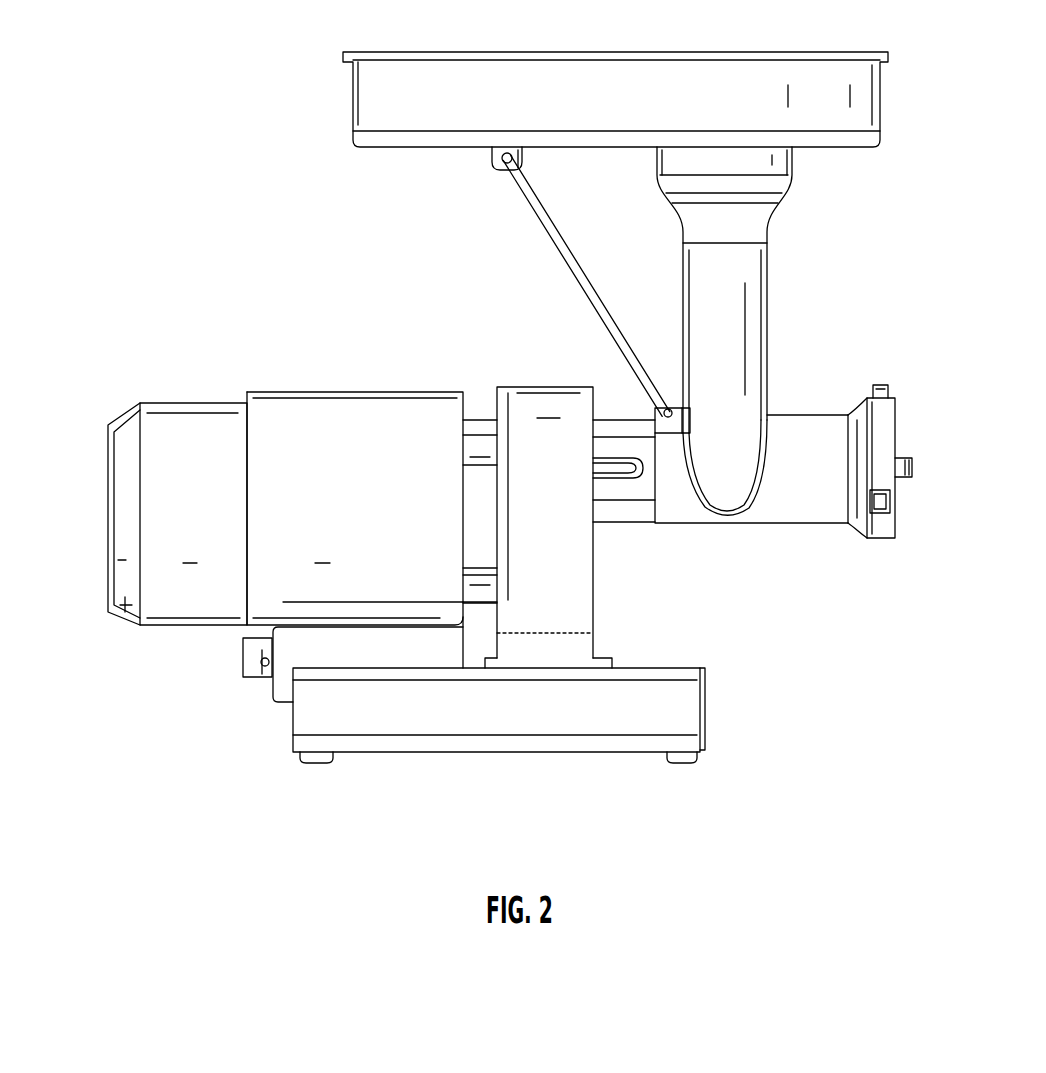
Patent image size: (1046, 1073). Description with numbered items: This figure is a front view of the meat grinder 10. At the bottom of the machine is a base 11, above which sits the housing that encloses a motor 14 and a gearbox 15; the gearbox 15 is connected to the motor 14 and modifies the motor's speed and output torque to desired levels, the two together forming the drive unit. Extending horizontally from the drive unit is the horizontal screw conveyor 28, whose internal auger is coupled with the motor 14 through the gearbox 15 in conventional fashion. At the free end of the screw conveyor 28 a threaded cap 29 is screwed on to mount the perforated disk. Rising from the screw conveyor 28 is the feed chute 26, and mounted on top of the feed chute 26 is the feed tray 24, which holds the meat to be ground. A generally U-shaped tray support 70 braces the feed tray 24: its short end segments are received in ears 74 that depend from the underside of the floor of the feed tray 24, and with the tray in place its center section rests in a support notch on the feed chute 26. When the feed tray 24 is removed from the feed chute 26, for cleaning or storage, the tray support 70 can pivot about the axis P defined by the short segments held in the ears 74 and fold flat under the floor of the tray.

The meat grinder 10 is at (90, 552).
The base 11 is at (538, 715).
The motor 14 is at (128, 600).
The gearbox 15 is at (565, 652).
The feed tray 24 is at (862, 132).
The feed chute 26 is at (752, 334).
The horizontal screw conveyor 28 is at (823, 427).
The threaded cap 29 is at (878, 422).
The tray support 70 is at (587, 285).
The ears 74 is at (493, 170).
The axis P is at (523, 160).